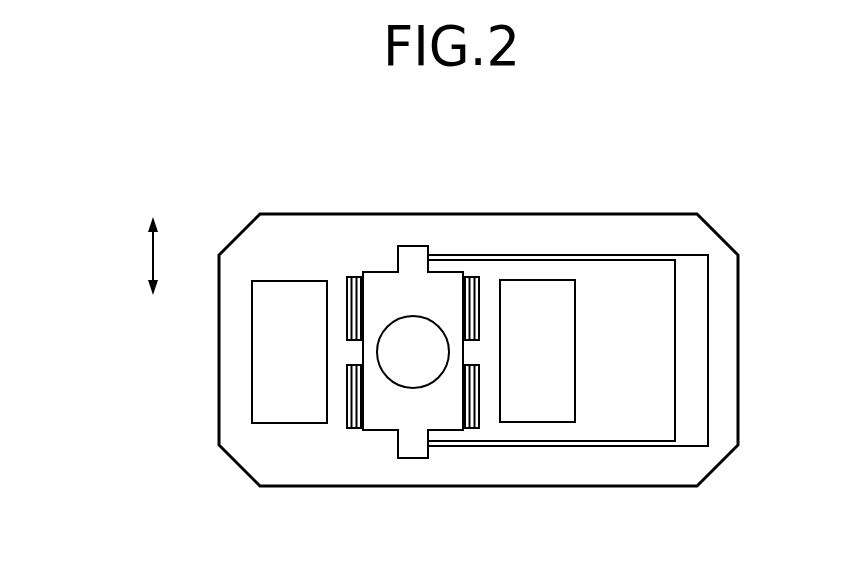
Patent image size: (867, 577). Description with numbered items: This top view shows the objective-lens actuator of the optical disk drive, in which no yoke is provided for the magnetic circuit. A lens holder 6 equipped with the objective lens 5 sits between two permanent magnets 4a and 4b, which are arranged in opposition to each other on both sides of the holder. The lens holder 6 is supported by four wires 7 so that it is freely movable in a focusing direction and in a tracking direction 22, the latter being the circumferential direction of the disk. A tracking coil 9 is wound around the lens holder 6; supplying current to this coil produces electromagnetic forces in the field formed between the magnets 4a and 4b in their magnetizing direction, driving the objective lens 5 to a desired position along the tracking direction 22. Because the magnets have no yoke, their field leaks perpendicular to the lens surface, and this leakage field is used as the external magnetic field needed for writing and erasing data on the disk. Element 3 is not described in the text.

The housing 3 is at (690, 228).
The permanent magnet 4a is at (545, 412).
The permanent magnet 4b is at (273, 413).
The objective lens 5 is at (417, 335).
The lens holder 6 is at (415, 255).
The wires 7 is at (645, 257).
The tracking coil 9 is at (347, 290).
The tracking direction 22 is at (150, 248).